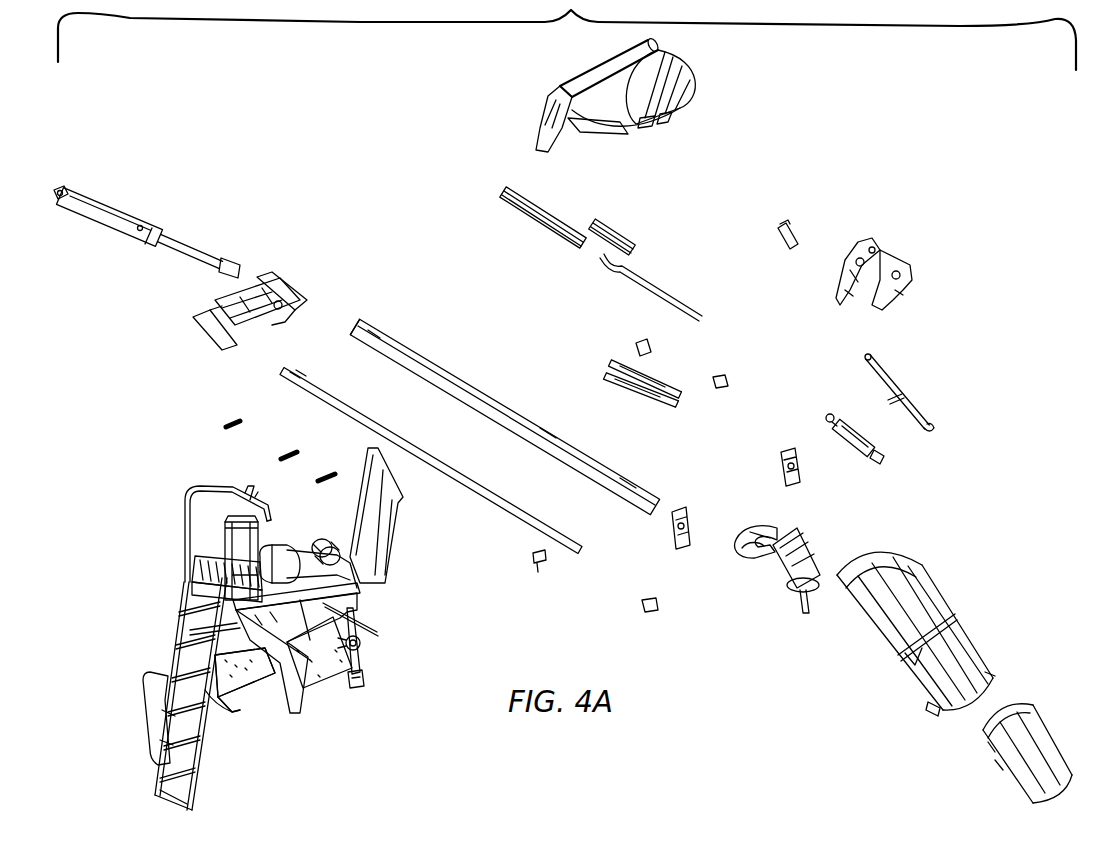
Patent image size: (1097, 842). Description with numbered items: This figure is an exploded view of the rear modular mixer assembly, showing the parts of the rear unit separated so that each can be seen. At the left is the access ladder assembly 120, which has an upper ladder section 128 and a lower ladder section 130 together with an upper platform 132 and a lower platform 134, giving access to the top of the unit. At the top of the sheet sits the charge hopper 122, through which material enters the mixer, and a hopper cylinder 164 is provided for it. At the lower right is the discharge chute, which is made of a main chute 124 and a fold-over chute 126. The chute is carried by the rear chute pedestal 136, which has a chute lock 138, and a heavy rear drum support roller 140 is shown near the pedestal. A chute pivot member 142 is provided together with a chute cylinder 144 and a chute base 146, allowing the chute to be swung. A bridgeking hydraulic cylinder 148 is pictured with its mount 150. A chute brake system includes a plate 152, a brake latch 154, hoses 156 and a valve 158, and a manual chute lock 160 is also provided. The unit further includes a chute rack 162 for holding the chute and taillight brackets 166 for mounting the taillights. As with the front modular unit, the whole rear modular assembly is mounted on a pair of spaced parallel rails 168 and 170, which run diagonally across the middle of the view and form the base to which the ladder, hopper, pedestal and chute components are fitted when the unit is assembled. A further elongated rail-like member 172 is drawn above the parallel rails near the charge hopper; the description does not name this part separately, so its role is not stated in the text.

The access ladder assembly 120 is at (150, 628).
The charge hopper 122 is at (690, 93).
The main chute 124 is at (939, 595).
The fold-over chute 126 is at (990, 747).
The upper ladder section 128 is at (184, 587).
The lower ladder section 130 is at (203, 775).
The upper platform 132 is at (208, 575).
The lower platform 134 is at (230, 702).
The rear chute pedestal 136 is at (300, 660).
The chute lock 138 is at (362, 643).
The rear drum support roller 140 is at (318, 541).
The chute pivot member 142 is at (810, 552).
The chute cylinder 144 is at (830, 414).
The chute base 146 is at (890, 374).
The bridgeking hydraulic cylinder 148 is at (130, 217).
The mount 150 is at (278, 285).
The plate 152 is at (750, 528).
The brake latch 154 is at (362, 598).
The hoses 156 is at (605, 381).
The valve 158 is at (651, 345).
The manual chute lock 160 is at (362, 676).
The chute rack 162 is at (878, 258).
The hopper cylinder 164 is at (790, 230).
The taillight brackets 166 is at (780, 473).
The rail 168 is at (338, 404).
The rail 170 is at (384, 363).
The rail 172 is at (568, 220).